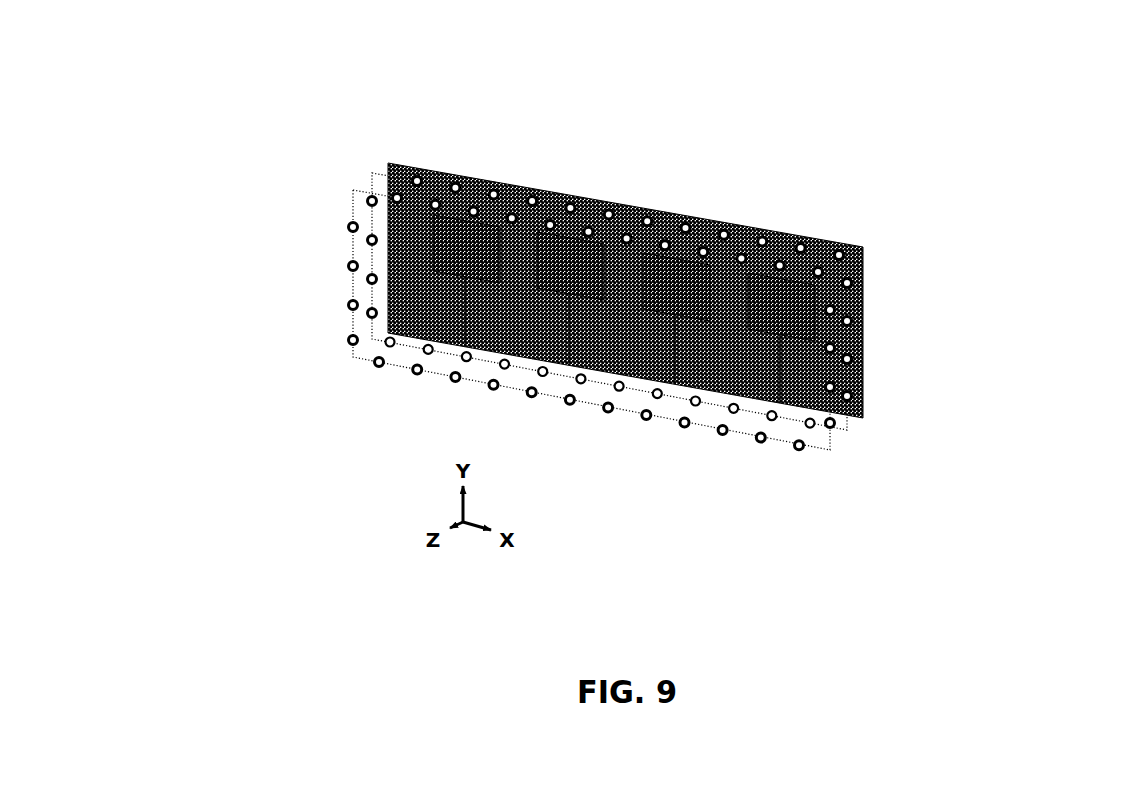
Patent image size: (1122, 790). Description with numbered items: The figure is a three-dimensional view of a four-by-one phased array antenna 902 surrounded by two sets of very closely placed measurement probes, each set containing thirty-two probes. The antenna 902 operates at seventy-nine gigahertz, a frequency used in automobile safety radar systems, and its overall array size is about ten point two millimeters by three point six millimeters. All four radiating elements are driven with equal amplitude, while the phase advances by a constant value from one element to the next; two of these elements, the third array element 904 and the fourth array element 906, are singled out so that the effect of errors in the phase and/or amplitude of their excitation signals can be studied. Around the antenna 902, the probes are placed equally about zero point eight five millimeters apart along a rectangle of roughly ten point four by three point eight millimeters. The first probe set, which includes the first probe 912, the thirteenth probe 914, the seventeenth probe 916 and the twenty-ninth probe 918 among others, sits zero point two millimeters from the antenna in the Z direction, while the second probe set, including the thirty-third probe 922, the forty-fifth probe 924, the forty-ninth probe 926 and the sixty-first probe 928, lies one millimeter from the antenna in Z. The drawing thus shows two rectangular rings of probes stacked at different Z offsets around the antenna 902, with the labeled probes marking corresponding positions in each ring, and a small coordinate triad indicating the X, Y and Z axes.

The 4×1 phased array antenna 902 is at (748, 236).
The element #3 904 is at (572, 262).
The element #4 906 is at (470, 257).
The probe #1 912 is at (818, 431).
The probe #13 914 is at (366, 320).
The probe #17 916 is at (419, 179).
The probe #29 918 is at (854, 275).
The probe #33 922 is at (795, 453).
The probe #45 924 is at (349, 347).
The probe #49 926 is at (393, 193).
The probe #61 928 is at (841, 308).